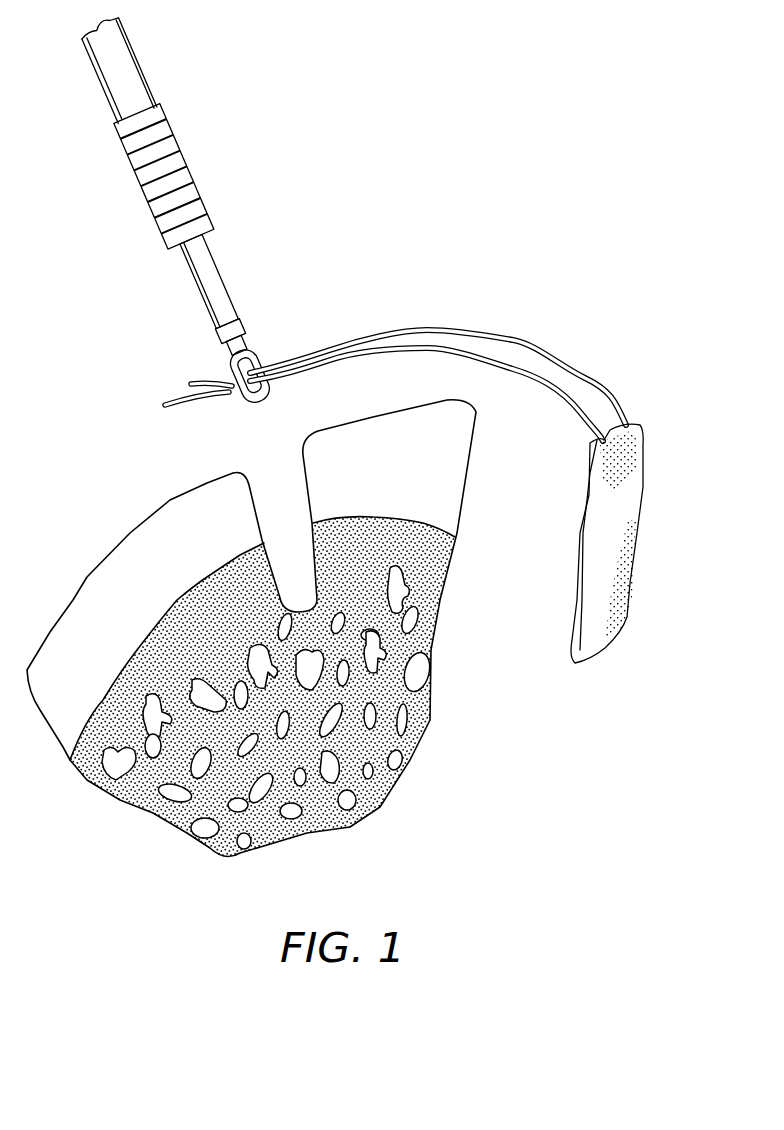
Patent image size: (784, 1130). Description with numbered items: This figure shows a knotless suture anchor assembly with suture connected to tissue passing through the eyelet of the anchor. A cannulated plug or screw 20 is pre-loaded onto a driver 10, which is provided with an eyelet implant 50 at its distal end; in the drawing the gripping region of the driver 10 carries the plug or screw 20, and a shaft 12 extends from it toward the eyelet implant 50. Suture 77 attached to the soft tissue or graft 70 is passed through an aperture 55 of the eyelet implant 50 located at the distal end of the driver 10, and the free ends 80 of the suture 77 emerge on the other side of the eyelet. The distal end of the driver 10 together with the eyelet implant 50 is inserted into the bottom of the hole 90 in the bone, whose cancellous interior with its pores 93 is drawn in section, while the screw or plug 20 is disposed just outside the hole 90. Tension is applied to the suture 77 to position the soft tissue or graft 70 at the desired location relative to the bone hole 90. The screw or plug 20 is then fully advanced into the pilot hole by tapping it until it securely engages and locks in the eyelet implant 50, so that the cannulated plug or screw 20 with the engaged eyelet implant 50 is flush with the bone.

The driver 10 is at (139, 61).
The cannulated plug or screw 20 is at (180, 179).
The shaft 12 is at (233, 285).
The aperture 55 is at (258, 354).
The eyelet implant 50 is at (229, 363).
The suture 77 is at (560, 352).
The suture tails 80 is at (169, 407).
The soft tissue or graft 70 is at (634, 502).
The hole 90 is at (295, 524).
The cancellous bone pores 93 is at (423, 734).